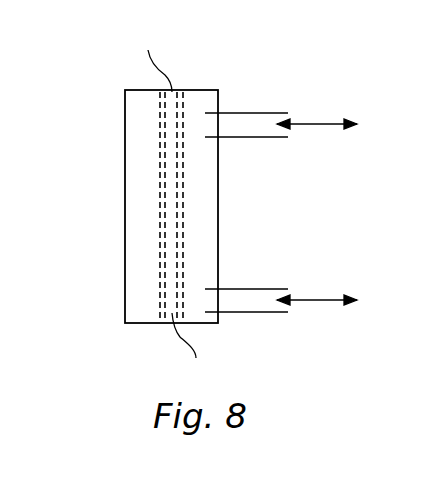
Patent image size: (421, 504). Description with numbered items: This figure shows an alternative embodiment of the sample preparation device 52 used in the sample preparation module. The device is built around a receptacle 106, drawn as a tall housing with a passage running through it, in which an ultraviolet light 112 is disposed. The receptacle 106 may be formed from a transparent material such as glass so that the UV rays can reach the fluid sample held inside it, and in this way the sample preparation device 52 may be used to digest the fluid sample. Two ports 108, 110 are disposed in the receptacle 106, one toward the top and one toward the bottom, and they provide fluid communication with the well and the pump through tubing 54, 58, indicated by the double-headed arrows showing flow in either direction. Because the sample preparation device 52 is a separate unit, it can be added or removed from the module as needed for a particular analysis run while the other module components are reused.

The sample preparation device 52 is at (285, 63).
The tubing 54 is at (243, 139).
The tubing 58 is at (248, 289).
The receptacle 106 is at (122, 297).
The port 108 is at (223, 126).
The port 110 is at (220, 300).
The ultraviolet (UV) light 112 is at (168, 127).